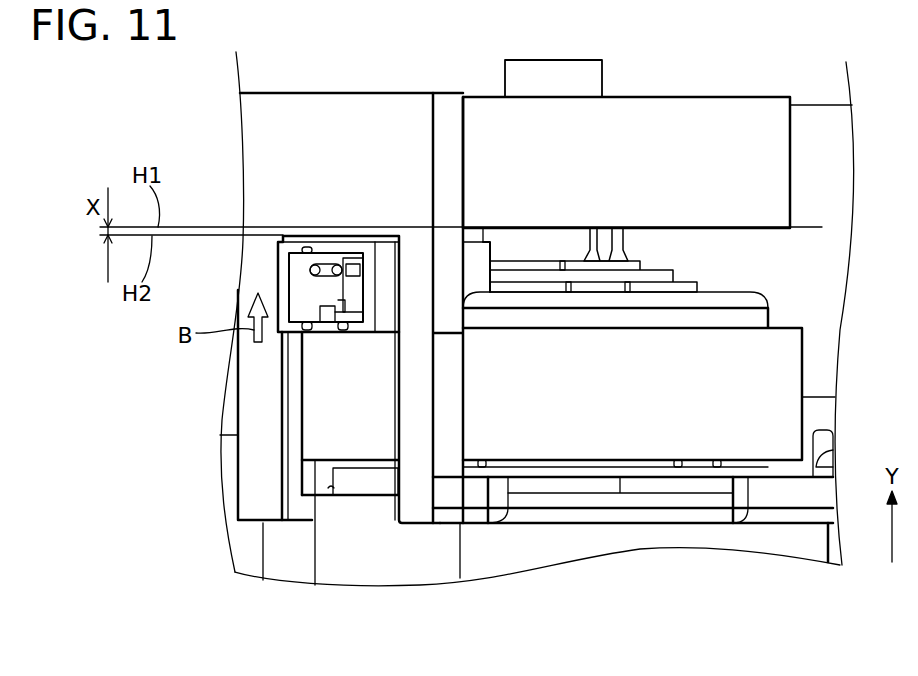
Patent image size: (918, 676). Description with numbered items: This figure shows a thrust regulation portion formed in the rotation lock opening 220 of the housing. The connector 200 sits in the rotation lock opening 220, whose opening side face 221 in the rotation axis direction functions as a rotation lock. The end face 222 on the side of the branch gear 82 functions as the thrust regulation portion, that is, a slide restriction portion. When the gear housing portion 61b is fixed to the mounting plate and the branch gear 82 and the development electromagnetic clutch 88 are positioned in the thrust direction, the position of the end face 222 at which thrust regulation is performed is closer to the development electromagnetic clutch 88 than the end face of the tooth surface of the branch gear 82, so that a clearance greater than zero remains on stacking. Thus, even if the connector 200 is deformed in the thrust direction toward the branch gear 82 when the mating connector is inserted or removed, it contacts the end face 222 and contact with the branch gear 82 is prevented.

The gear housing portion 61b is at (382, 114).
The branch gear 82 is at (675, 122).
The end face 222 is at (388, 241).
The connector 200 is at (278, 248).
The opening side face 221 is at (295, 443).
The development electromagnetic clutch 88 is at (359, 415).
The rotation lock opening 220 is at (388, 446).